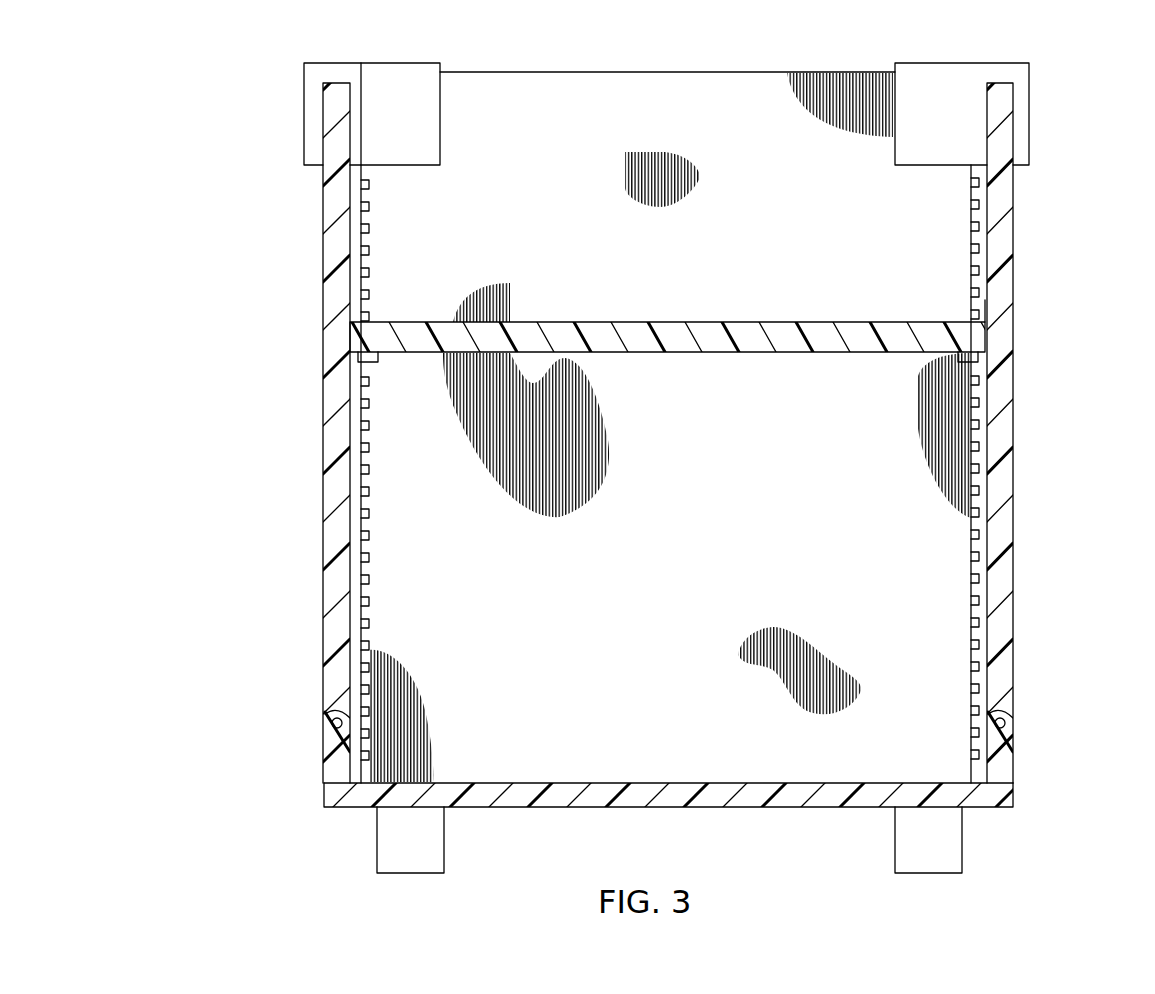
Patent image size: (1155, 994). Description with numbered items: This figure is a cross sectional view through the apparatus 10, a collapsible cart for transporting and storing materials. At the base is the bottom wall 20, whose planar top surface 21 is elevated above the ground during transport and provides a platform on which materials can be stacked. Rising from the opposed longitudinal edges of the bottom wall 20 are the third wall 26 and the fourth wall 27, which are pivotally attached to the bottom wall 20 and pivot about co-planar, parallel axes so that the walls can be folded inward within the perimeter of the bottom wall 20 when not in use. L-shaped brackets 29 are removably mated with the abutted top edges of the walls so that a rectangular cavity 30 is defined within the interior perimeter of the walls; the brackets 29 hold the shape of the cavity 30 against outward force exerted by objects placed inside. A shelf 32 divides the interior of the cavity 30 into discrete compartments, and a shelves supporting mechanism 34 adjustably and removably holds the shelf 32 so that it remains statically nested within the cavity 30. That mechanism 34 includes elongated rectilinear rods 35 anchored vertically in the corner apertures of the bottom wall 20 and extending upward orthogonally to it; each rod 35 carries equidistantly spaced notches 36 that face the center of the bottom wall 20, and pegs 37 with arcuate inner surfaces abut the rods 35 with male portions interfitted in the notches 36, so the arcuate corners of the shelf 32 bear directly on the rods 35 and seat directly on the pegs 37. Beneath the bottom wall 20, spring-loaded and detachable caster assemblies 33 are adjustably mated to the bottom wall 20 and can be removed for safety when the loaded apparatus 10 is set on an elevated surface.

The apparatus 10 is at (179, 208).
The bottom wall 20 is at (796, 795).
The planar top surface 21 is at (737, 780).
The third wall 26 is at (325, 418).
The fourth wall 27 is at (1005, 530).
The L-shaped brackets 29 is at (372, 66).
The rectangular cavity 30 is at (888, 500).
The shelves 32 is at (370, 343).
The caster assemblies 33 is at (350, 838).
The shelves supporting mechanism 34 is at (944, 293).
The rods 35 is at (985, 300).
The notches 36 is at (978, 468).
The pegs 37 is at (985, 362).